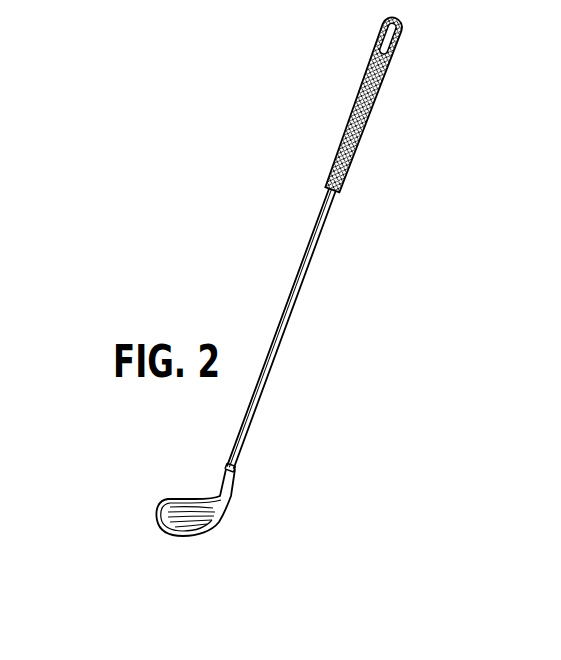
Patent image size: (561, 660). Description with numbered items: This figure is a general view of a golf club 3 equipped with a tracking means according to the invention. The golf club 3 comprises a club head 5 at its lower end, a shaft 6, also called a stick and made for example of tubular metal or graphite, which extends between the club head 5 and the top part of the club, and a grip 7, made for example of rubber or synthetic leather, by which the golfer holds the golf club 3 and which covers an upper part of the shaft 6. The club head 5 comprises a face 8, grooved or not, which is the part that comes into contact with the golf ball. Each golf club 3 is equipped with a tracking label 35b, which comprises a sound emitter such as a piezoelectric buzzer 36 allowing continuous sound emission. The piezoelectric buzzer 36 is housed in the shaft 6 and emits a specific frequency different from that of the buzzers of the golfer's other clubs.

The golf club 3 is at (301, 325).
The club head 5 is at (221, 512).
The shaft 6 is at (297, 277).
The grip 7 is at (370, 92).
The face 8 is at (176, 504).
The tracking label 35b is at (338, 74).
The piezoelectric buzzer 36 is at (380, 43).